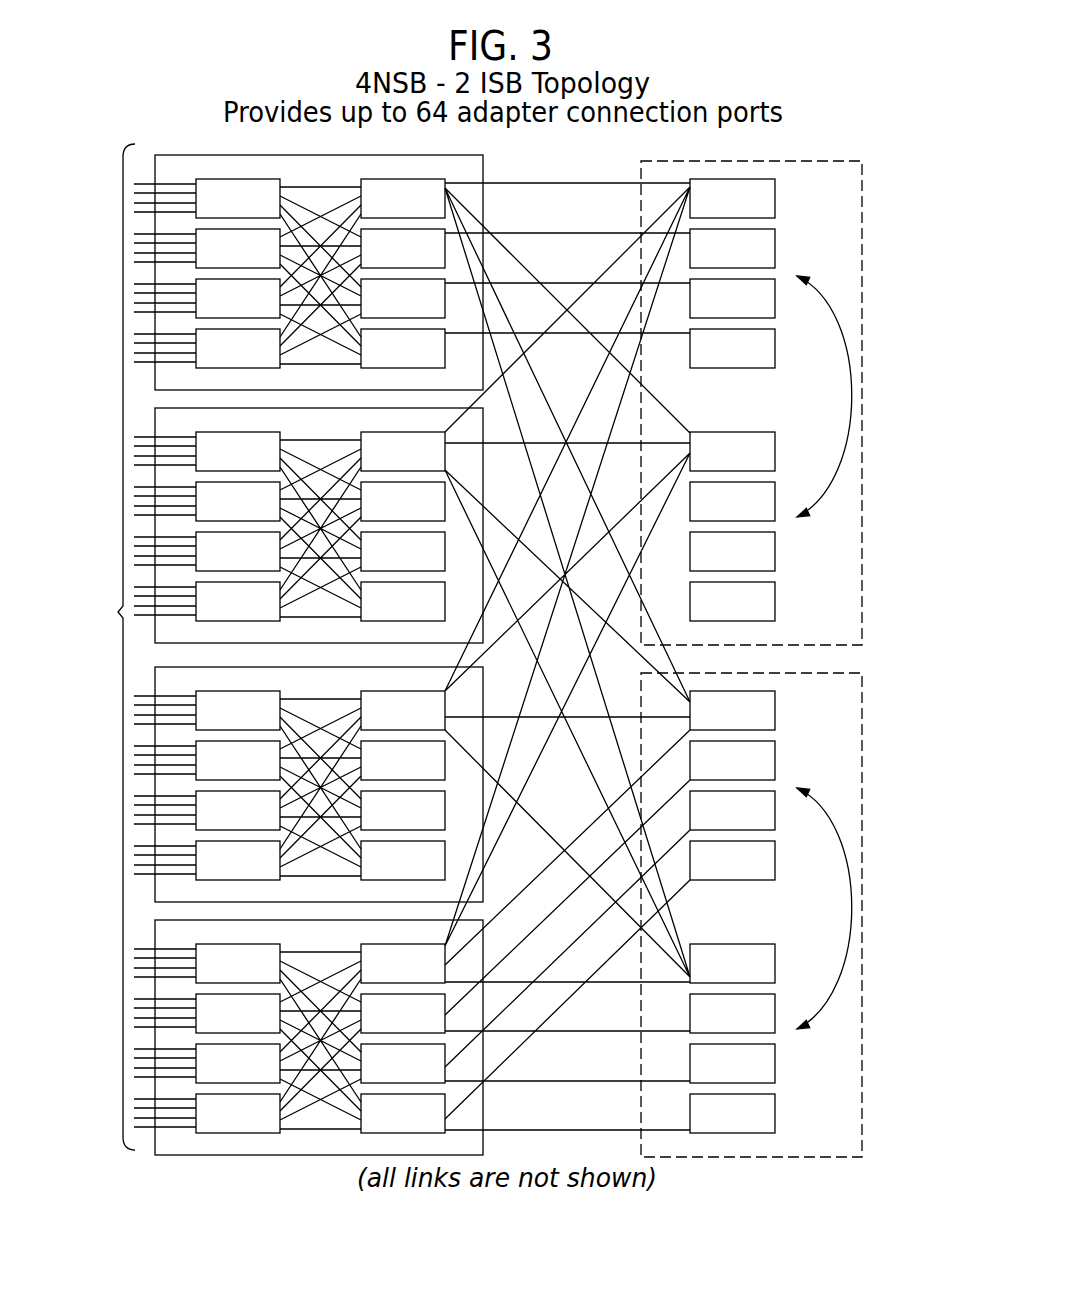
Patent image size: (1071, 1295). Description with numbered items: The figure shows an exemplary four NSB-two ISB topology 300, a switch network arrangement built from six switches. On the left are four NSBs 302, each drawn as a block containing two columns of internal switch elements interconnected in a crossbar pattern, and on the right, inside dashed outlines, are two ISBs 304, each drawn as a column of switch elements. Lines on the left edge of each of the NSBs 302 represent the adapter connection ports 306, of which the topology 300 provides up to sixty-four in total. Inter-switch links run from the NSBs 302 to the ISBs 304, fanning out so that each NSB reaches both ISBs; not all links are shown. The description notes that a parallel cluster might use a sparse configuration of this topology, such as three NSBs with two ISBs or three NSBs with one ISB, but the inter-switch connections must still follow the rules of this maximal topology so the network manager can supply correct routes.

The 4 NSB-2 ISB topology 300 is at (713, 78).
The NSBs 302 is at (485, 1190).
The ISBs 304 is at (862, 1190).
The adapter connection ports 306 is at (122, 612).